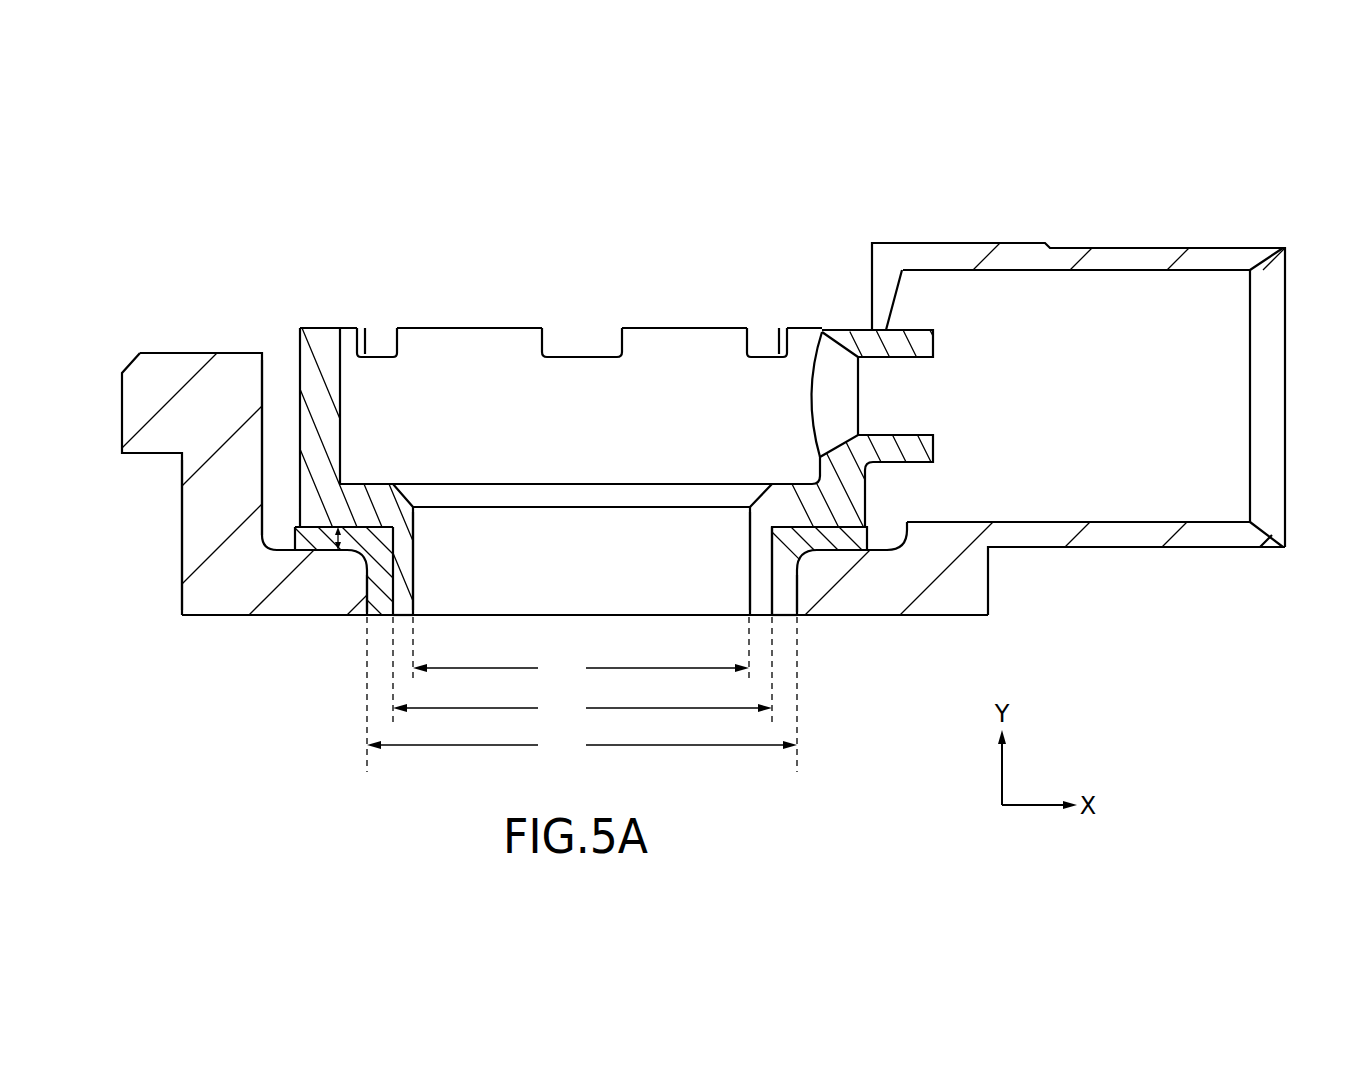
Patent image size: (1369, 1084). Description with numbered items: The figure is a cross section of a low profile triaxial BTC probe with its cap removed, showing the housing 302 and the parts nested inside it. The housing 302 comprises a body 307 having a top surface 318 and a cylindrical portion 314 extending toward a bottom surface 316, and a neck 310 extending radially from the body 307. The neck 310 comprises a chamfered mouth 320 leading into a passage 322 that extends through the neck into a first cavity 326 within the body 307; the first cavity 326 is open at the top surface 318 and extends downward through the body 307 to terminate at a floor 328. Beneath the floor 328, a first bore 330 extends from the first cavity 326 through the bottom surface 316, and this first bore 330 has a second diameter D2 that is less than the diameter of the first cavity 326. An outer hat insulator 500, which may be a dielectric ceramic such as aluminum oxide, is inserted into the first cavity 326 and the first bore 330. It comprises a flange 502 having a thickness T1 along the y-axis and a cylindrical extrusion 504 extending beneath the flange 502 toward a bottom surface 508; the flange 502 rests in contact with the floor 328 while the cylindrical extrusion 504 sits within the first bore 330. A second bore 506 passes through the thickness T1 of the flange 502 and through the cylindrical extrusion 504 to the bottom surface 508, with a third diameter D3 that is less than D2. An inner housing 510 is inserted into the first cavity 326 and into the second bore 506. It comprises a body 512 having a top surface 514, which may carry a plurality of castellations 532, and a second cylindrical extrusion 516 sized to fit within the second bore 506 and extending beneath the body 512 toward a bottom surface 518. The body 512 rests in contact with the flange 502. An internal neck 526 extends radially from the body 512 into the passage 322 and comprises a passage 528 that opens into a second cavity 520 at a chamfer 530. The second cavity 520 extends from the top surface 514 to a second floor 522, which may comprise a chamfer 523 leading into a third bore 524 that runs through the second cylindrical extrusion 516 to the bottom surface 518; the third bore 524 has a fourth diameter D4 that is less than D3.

The housing 302 is at (1076, 379).
The body 307 is at (120, 403).
The neck 310 is at (1145, 548).
The cylindrical portion 314 is at (180, 548).
The bottom surface 316 is at (280, 613).
The top surface 318 is at (187, 353).
The chamfered mouth 320 is at (1273, 298).
The passage 322 is at (1113, 426).
The first cavity 326 is at (278, 362).
The floor 328 is at (303, 553).
The first bore 330 is at (363, 593).
The outer hat insulator 500 is at (847, 573).
The flange 502 is at (867, 537).
The cylindrical extrusion 504 is at (783, 617).
The second bore 506 is at (760, 600).
The bottom surface 508 is at (797, 617).
The inner housing 510 is at (614, 473).
The body 512 is at (317, 342).
The top surface 514 is at (430, 327).
The second cylindrical extrusion 516 is at (403, 537).
The bottom surface 518 is at (402, 617).
The second cavity 520 is at (471, 416).
The second floor 522 is at (367, 482).
The chamfer 523 is at (535, 497).
The third bore 524 is at (552, 589).
The internal neck 526 is at (925, 343).
The passage 528 is at (875, 412).
The chamfer 530 is at (815, 398).
The castellations 532 is at (540, 327).
The thickness T1 is at (333, 552).
The second diameter D2 is at (582, 694).
The third diameter D3 is at (582, 670).
The fourth diameter D4 is at (581, 650).